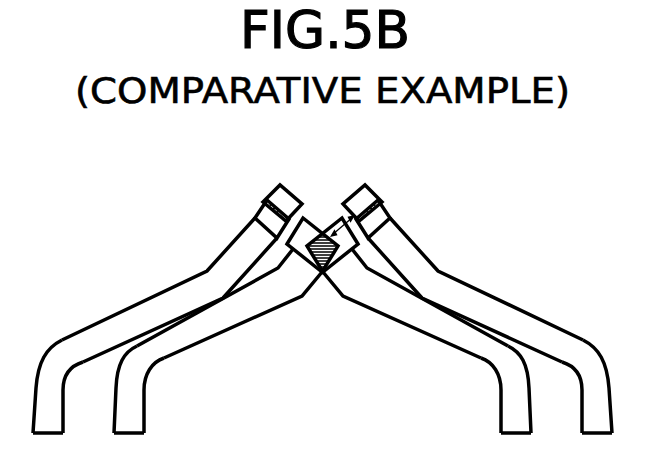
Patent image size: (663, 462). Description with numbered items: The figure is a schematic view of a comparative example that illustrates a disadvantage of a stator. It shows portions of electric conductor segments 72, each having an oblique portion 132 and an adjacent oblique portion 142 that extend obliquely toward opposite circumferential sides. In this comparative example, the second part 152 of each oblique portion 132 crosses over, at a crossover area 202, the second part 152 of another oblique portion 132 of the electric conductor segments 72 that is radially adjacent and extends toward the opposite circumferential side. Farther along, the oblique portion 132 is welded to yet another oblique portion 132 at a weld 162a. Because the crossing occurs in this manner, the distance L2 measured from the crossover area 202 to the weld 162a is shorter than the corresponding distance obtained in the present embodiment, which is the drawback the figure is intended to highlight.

The oblique portion 132 is at (180, 277).
The second bus bar 142 is at (197, 325).
The electric conductor segment 72 is at (151, 384).
The second part 152 is at (296, 243).
The weld 162a is at (366, 198).
The crossover area 202 is at (318, 276).
The distance L2 is at (352, 247).